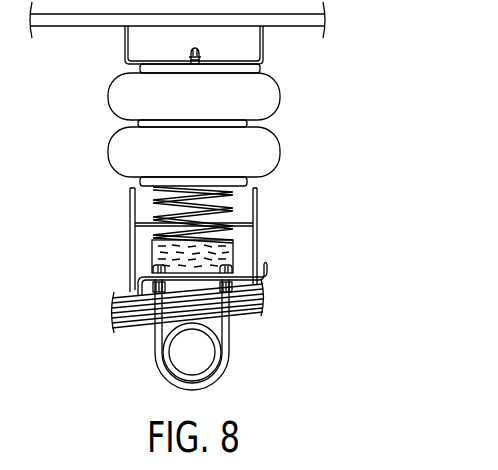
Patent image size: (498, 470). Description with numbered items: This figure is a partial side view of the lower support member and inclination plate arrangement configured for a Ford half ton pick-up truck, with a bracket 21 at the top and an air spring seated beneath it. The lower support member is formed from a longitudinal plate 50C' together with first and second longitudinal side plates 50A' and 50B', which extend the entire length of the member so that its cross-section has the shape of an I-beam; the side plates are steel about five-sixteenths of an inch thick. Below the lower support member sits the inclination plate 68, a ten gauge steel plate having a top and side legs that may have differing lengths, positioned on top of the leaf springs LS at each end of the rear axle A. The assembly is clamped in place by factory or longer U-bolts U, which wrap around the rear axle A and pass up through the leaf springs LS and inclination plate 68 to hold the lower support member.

The mounting bracket 21 is at (263, 41).
The second longitudinal side plate 50B' is at (100, 240).
The first longitudinal side plate 50A' is at (286, 236).
The longitudinal plate 50C' is at (155, 259).
The inclination plate 68 is at (268, 268).
The leaf springs LS is at (136, 326).
The U-bolts U is at (229, 325).
The rear axle A is at (199, 361).